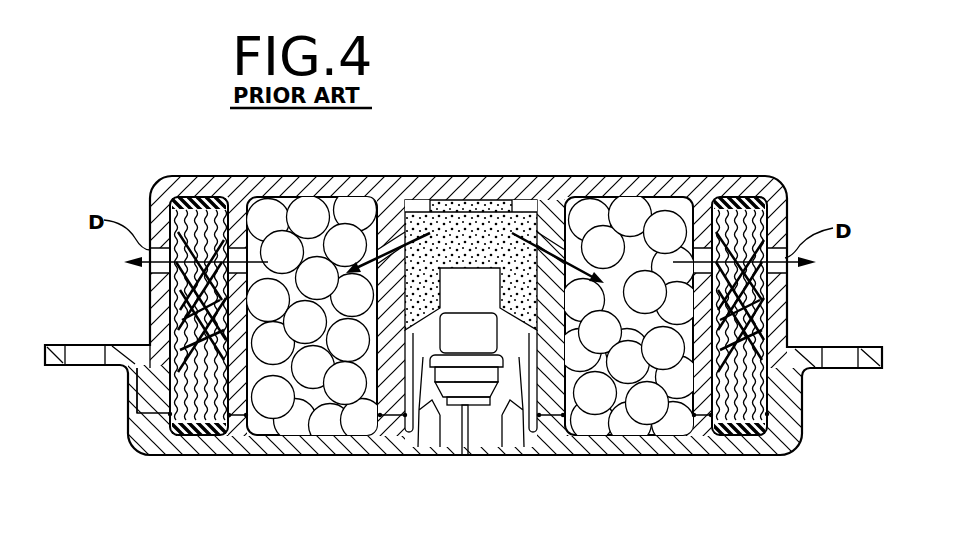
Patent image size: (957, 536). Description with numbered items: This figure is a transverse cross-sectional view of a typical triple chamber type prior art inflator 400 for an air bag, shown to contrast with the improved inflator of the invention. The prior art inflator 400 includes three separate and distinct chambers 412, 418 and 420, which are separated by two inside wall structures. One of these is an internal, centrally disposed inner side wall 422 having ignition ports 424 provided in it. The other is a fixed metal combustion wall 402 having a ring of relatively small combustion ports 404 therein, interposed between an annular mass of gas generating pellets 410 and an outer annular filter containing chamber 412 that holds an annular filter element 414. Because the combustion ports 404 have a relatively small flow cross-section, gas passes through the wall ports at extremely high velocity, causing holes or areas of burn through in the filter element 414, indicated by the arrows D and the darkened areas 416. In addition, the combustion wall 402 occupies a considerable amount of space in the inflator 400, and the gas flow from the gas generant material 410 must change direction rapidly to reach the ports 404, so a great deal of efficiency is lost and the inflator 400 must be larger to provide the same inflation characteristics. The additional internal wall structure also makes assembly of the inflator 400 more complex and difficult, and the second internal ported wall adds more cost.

The prior art inflator 400 is at (483, 172).
The combustion wall 402 is at (702, 200).
The combustion ports 404 is at (228, 247).
The gas generating pellets 410 is at (342, 392).
The filter containing chamber 412 is at (168, 312).
The filter element 414 is at (172, 387).
The darkened areas 416 is at (172, 240).
The chamber 418 is at (340, 208).
The chamber 420 is at (413, 345).
The inner side wall 422 is at (386, 398).
The ignition ports 424 is at (388, 248).